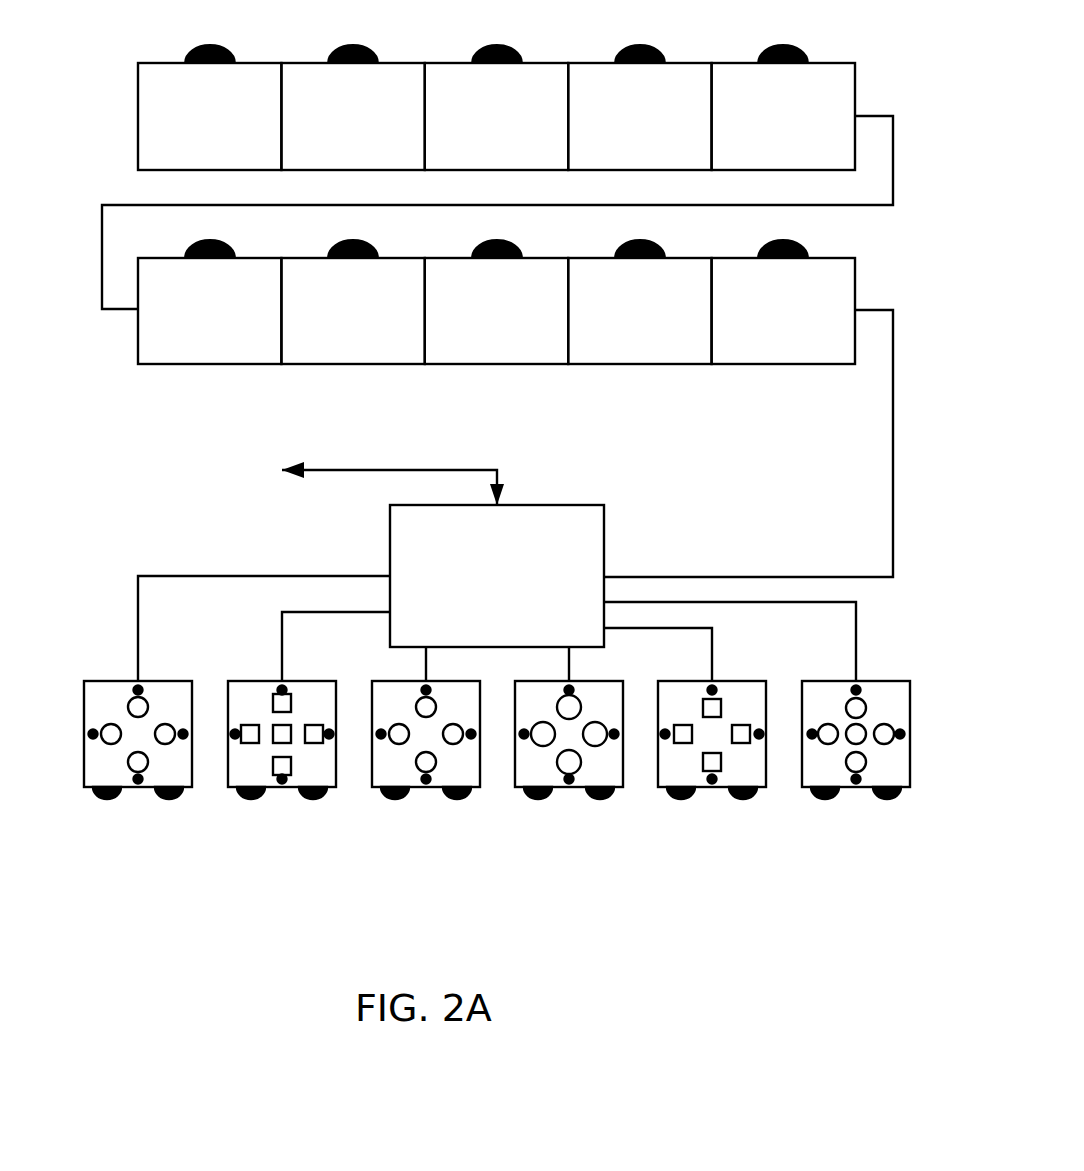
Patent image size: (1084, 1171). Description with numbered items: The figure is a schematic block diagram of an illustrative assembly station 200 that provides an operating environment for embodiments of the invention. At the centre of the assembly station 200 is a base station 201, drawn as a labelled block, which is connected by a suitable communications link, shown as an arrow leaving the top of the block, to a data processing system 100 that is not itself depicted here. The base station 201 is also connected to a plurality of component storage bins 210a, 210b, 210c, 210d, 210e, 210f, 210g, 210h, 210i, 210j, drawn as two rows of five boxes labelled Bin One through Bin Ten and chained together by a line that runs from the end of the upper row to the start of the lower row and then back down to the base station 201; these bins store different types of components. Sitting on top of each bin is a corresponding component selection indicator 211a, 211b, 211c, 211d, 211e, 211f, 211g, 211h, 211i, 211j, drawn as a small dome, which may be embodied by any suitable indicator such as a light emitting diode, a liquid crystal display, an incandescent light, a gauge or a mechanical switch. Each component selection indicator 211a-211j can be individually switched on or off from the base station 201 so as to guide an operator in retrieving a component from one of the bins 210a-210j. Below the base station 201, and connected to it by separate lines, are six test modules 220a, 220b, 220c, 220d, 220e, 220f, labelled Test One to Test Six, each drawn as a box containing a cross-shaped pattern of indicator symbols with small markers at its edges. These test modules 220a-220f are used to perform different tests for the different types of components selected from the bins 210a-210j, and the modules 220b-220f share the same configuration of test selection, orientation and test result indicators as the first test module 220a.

The assembly station 200 is at (482, 520).
The base station 201 is at (585, 505).
The data processing system 100 is at (313, 469).
The component storage bin 210a is at (209, 116).
The component storage bin 210b is at (352, 116).
The component storage bin 210c is at (496, 116).
The component storage bin 210d is at (639, 116).
The component storage bin 210e is at (783, 116).
The component storage bin 210f is at (209, 311).
The component storage bin 210g is at (352, 311).
The component storage bin 210h is at (496, 311).
The component storage bin 210i is at (639, 311).
The component storage bin 210j is at (783, 311).
The component selection indicator 211a is at (208, 46).
The component selection indicator 211b is at (351, 46).
The component selection indicator 211c is at (494, 46).
The component selection indicator 211d is at (638, 46).
The component selection indicator 211e is at (781, 46).
The component selection indicator 211f is at (232, 243).
The component selection indicator 211g is at (375, 243).
The component selection indicator 211h is at (518, 243).
The component selection indicator 211i is at (662, 243).
The component selection indicator 211j is at (805, 243).
The test module 220a is at (84, 690).
The test module 220b is at (227, 690).
The test module 220c is at (372, 694).
The test module 220d is at (623, 700).
The test module 220e is at (732, 682).
The test module 220f is at (873, 682).